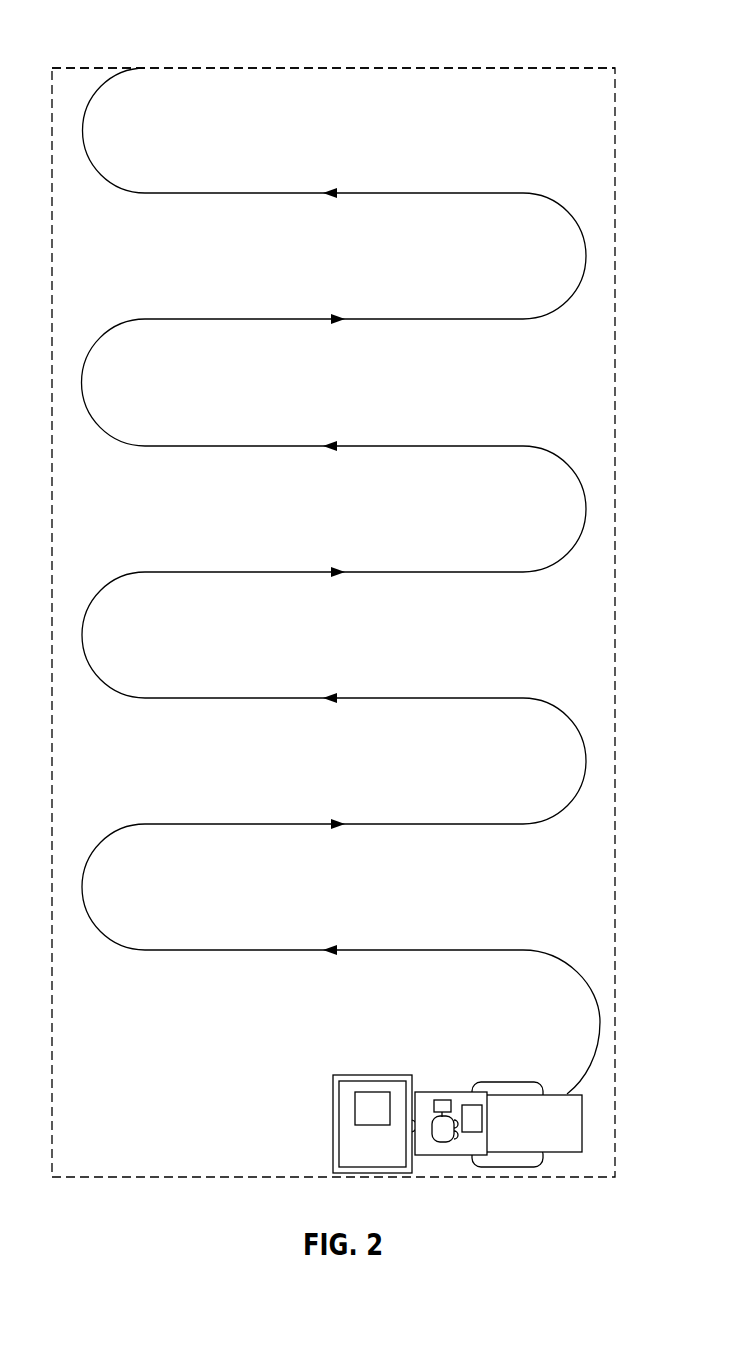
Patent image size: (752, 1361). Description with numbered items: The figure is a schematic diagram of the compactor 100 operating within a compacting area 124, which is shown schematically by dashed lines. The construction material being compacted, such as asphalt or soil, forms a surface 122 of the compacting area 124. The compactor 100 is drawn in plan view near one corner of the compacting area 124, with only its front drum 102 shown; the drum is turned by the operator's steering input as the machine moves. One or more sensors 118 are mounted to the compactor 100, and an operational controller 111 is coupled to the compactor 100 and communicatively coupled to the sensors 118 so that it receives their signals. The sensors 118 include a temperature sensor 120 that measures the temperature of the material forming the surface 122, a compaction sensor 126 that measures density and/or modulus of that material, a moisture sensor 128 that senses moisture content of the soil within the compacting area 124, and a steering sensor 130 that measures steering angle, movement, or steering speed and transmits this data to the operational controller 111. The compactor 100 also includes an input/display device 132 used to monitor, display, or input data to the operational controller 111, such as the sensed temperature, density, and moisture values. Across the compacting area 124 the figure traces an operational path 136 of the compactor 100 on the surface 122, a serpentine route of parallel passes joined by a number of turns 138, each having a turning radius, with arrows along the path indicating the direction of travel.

The compactor 100 is at (294, 1078).
The front drum 102 is at (498, 1078).
The operational controller 111 is at (447, 1091).
The sensors 118 is at (291, 1054).
The temperature sensor 120 is at (291, 1054).
The surface 122 is at (502, 76).
The compacting area 124 is at (226, 68).
The compaction sensor 126 is at (291, 1054).
The moisture sensor 128 is at (291, 1054).
The steering sensor 130 is at (291, 1054).
The input/display device 132 is at (470, 1113).
The operational path 136 is at (428, 193).
The turns 138 is at (82, 132).